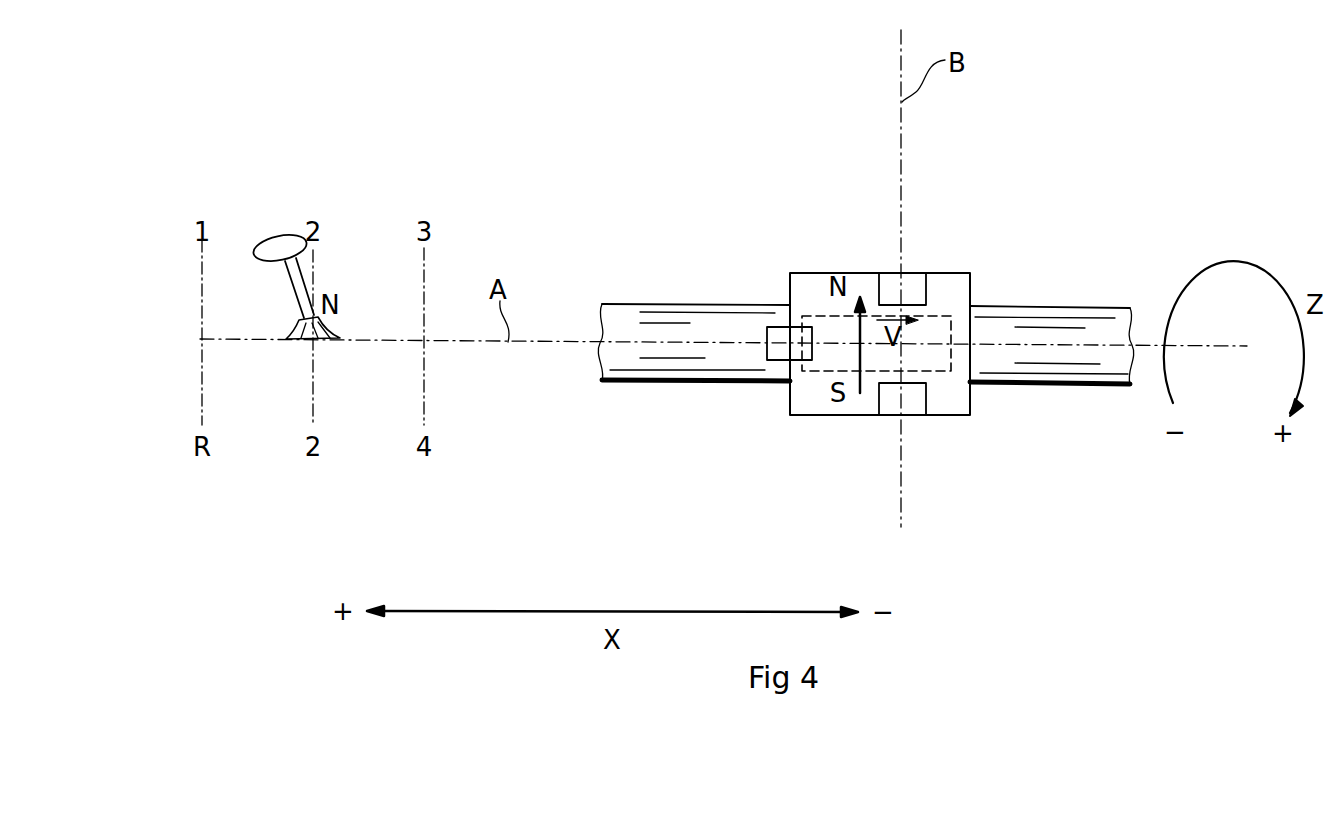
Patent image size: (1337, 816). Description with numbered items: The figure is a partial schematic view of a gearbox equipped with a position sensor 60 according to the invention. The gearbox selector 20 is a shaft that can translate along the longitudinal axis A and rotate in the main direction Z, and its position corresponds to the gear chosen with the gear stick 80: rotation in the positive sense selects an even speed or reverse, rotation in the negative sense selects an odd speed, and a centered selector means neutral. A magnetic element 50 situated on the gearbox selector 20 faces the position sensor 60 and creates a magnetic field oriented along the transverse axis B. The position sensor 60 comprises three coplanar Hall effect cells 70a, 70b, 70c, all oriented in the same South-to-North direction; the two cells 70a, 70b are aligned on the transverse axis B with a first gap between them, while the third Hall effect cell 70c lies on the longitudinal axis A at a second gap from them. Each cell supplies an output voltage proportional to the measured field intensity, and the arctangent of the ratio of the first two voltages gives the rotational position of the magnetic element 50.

The gearbox selector 20 is at (1067, 320).
The magnetic element 50 is at (840, 365).
The position sensor 60 is at (806, 275).
The first Hall effect cell 70a is at (913, 278).
The second Hall effect cell 70b is at (913, 405).
The third Hall effect cell 70c is at (778, 352).
The gear stick 80 is at (283, 247).